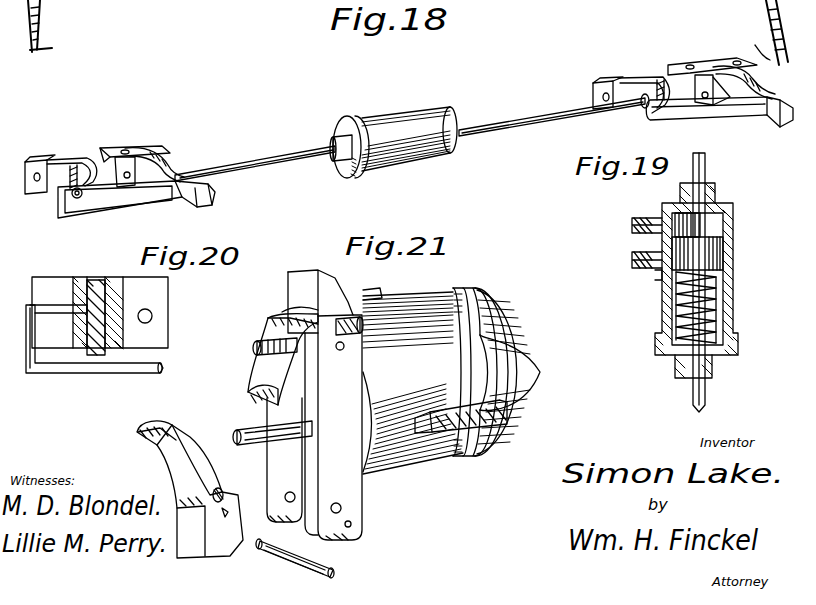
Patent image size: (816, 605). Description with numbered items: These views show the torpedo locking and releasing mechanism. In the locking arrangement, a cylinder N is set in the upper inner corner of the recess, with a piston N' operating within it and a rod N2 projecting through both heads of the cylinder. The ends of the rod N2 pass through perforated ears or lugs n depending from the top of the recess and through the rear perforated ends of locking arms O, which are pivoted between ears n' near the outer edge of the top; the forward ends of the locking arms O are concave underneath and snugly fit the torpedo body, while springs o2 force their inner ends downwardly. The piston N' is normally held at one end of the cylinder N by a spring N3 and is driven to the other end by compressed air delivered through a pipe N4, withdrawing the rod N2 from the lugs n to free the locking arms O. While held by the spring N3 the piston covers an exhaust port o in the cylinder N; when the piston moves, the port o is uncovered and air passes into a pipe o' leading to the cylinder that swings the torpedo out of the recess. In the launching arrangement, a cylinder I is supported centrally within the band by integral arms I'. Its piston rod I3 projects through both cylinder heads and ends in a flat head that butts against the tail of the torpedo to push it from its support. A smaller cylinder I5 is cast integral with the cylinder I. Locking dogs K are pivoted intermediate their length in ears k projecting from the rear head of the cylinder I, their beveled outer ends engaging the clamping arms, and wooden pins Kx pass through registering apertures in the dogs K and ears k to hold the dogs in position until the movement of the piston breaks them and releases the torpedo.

In FIG. 18, the perforated ears or lugs n is at (347, 121).
In FIG. 20, the perforated ears or lugs n is at (100, 300).
In FIG. 18, the ears n' is at (428, 109).
In FIG. 18, the springs o2 is at (170, 167).
In FIG. 18, the cylinder N is at (393, 128).
In FIG. 19, the cylinder N is at (674, 280).
In FIG. 18, the rod N2 is at (260, 144).
In FIG. 19, the rod N2 is at (705, 172).
In FIG. 20, the rod N2 is at (95, 378).
In FIG. 18, the locking arms O is at (146, 193).
In FIG. 20, the locking arms O is at (99, 297).
In FIG. 19, the piston N' is at (723, 241).
In FIG. 19, the spring N3 is at (710, 290).
In FIG. 19, the pipe N4 is at (642, 226).
In FIG. 19, the pipe o' is at (623, 264).
In FIG. 19, the exhaust port o is at (639, 285).
In FIG. 21, the cylinder I is at (413, 383).
In FIG. 21, the arms I' is at (491, 372).
In FIG. 21, the cylinder I5 is at (389, 308).
In FIG. 21, the piston rod I3 is at (258, 427).
In FIG. 21, the locking dogs K is at (295, 293).
In FIG. 21, the ears k is at (305, 460).
In FIG. 21, the wooden pins Kx is at (357, 343).